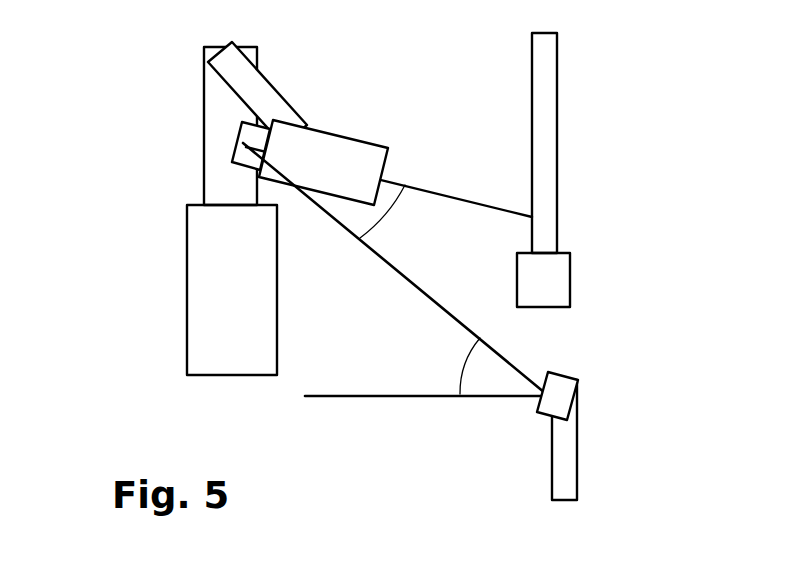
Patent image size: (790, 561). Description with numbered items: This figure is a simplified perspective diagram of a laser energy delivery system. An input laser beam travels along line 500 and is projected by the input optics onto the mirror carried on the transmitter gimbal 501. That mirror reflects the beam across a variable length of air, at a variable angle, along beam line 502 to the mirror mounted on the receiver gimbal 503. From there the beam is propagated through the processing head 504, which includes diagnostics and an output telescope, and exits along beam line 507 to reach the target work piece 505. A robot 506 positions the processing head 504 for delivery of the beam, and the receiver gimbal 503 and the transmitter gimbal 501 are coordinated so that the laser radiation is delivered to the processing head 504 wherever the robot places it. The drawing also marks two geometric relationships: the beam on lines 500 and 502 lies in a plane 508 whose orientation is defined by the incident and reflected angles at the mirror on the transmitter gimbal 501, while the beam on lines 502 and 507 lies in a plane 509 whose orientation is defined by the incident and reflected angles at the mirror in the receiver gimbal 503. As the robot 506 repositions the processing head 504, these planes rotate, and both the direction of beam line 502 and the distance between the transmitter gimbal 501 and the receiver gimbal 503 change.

The input laser beam line 500 is at (370, 397).
The transmitter gimbal 501 is at (540, 412).
The beam line 502 is at (403, 273).
The receiver gimbal 503 is at (243, 137).
The processing head 504 is at (343, 137).
The target work piece 505 is at (548, 187).
The robot 506 is at (204, 180).
The output beam line 507 is at (434, 187).
The plane of input and reflected beams 508 is at (455, 355).
The plane of reflected and output beams 509 is at (394, 232).